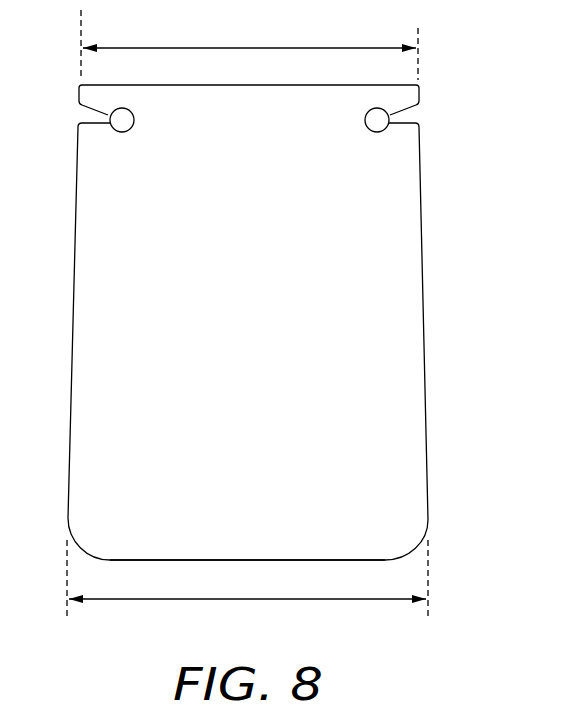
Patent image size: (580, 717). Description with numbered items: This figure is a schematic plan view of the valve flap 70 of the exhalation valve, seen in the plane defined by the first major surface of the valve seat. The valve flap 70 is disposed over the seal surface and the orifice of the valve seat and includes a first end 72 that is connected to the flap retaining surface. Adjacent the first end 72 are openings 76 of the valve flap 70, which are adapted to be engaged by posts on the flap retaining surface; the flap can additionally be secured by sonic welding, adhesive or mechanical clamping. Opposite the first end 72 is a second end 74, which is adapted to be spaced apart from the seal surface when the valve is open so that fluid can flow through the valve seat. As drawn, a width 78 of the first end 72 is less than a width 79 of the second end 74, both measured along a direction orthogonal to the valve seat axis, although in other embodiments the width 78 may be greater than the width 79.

The valve flap 70 is at (470, 271).
The first end 72 is at (200, 84).
The second end 74 is at (203, 561).
The openings 76 is at (118, 132).
The width of the first end 78 is at (325, 48).
The width of the second end 79 is at (285, 600).